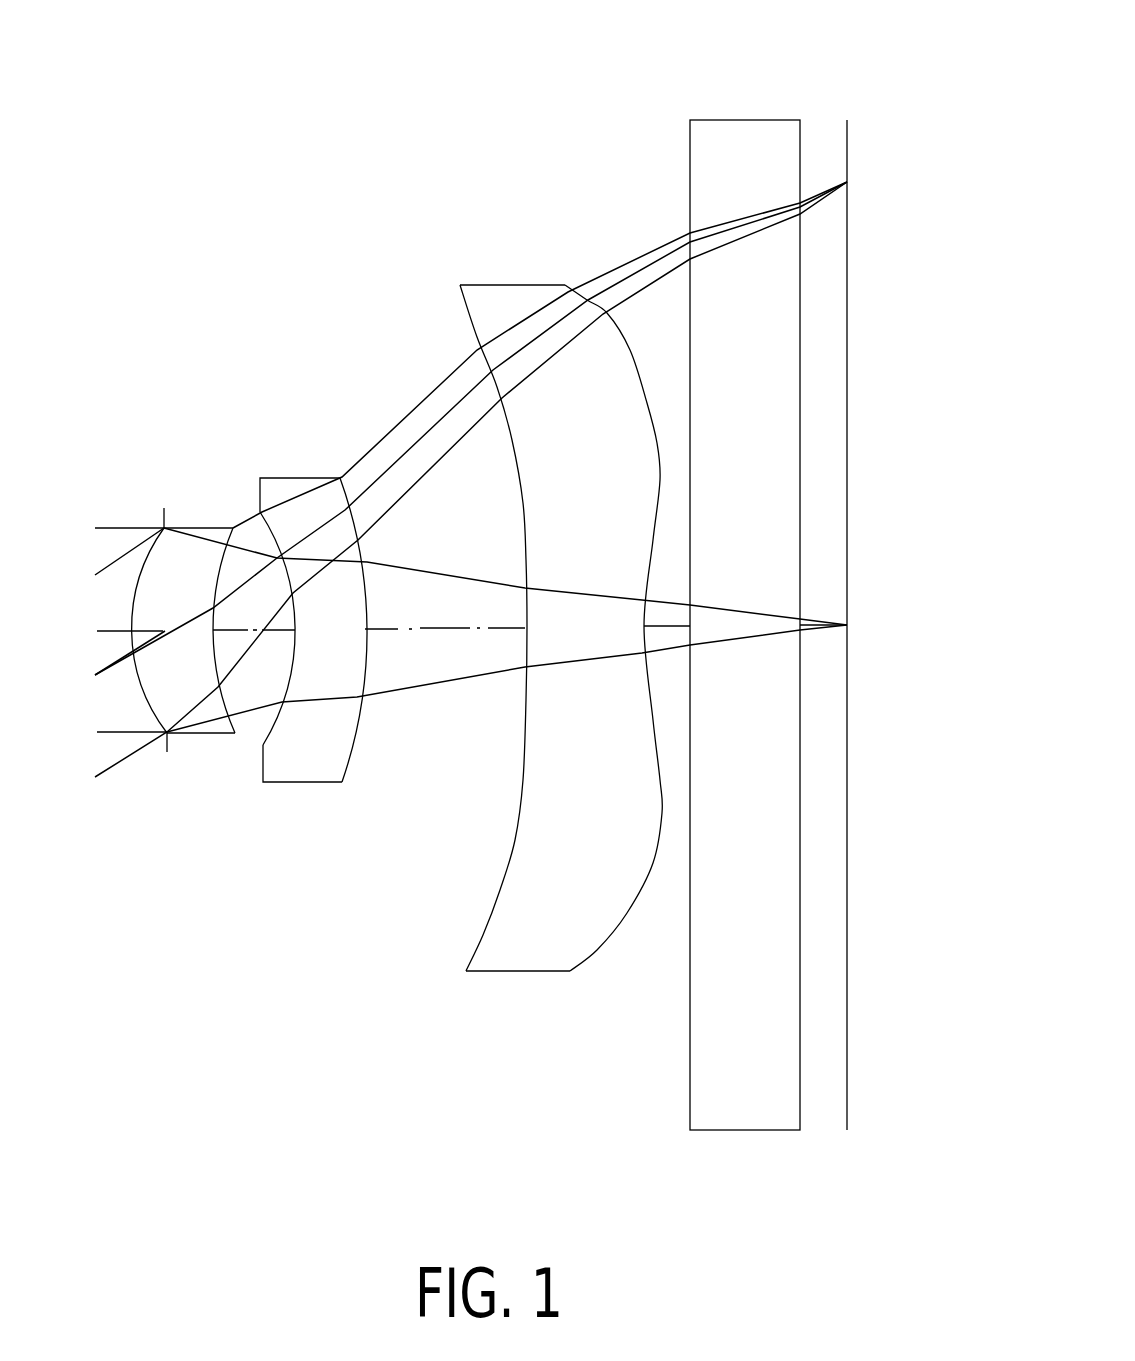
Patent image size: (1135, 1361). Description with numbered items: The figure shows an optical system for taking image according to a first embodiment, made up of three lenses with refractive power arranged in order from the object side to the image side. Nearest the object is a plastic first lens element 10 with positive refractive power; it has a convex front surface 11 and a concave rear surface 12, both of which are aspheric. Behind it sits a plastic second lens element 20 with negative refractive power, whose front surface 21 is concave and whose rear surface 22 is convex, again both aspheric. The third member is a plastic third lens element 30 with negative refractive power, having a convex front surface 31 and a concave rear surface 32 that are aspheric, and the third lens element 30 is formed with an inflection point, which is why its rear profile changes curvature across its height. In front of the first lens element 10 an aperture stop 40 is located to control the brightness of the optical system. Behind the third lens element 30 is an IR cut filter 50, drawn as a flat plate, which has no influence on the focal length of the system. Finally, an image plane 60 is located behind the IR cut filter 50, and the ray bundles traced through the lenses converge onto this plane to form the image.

The first lens element 10 is at (164, 633).
The front surface of the first lens element 11 is at (141, 717).
The rear surface of the first lens element 12 is at (210, 715).
The second lens element 20 is at (322, 612).
The front surface of the second lens element 21 is at (283, 718).
The rear surface of the second lens element 22 is at (363, 716).
The third lens element 30 is at (561, 602).
The front surface of the third lens element 31 is at (523, 818).
The rear surface of the third lens element 32 is at (659, 856).
The aperture stop 40 is at (154, 498).
The IR cut filter 50 is at (753, 188).
The image plane 60 is at (834, 156).